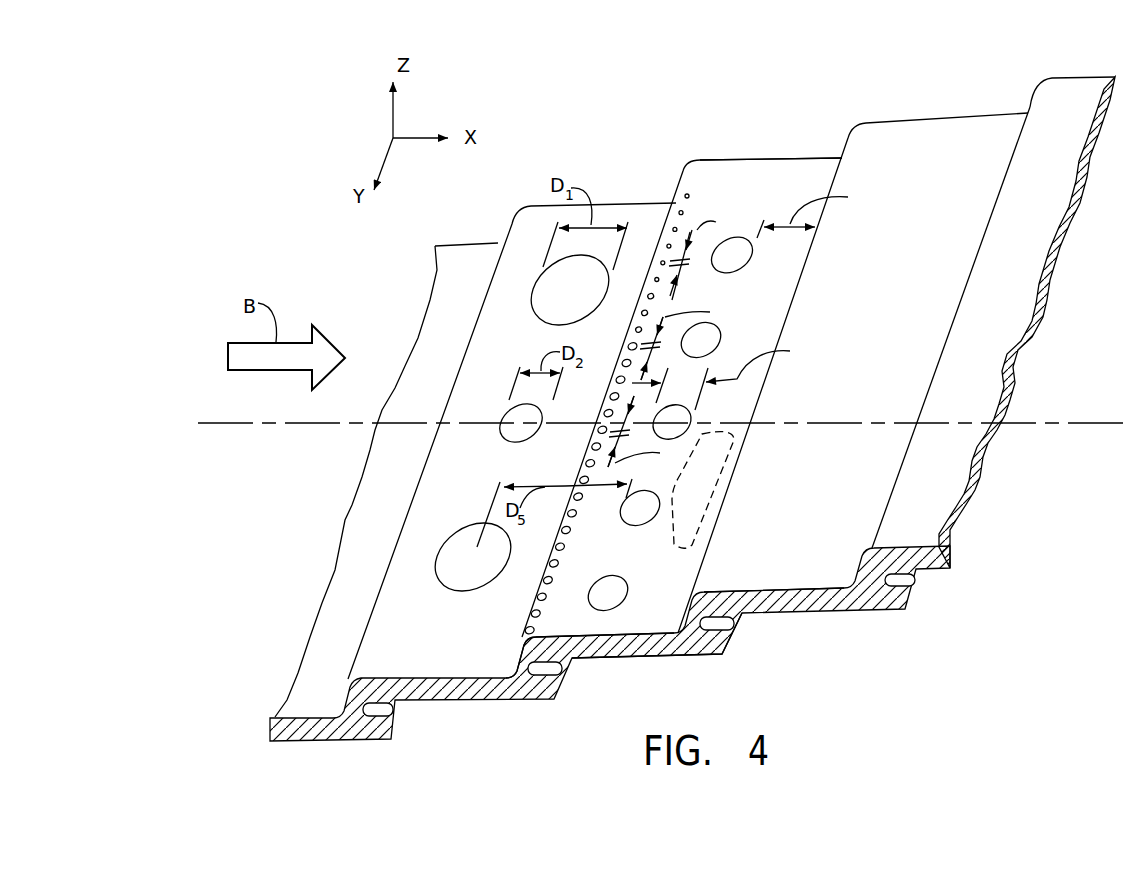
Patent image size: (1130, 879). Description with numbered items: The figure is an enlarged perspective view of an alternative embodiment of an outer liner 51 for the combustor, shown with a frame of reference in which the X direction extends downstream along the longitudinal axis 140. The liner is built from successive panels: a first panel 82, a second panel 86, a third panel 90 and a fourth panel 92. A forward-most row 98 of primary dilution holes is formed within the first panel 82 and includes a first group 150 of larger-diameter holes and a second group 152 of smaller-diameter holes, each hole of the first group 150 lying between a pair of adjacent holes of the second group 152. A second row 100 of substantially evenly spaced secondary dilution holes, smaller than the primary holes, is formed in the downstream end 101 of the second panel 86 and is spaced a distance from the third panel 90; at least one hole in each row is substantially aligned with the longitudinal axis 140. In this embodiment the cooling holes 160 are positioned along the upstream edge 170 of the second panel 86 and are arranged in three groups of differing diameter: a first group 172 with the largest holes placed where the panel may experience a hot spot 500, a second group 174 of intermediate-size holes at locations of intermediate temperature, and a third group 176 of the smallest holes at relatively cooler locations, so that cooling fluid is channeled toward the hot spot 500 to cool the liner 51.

The outer liner 51 is at (713, 150).
The cooling holes 160 is at (712, 170).
The third group 176 is at (715, 201).
The second group 174 is at (682, 299).
The first group 150 is at (553, 317).
The second group 152 is at (510, 442).
The longitudinal axis 140 is at (272, 423).
The forward-most row 98 is at (512, 441).
The first panel 82 is at (433, 667).
The upstream edge 170 is at (561, 633).
The second panel 86 is at (605, 625).
The downstream end 101 is at (694, 658).
The third panel 90 is at (788, 577).
The fourth panel 92 is at (905, 533).
The second row 100 is at (665, 424).
The first group 172 is at (601, 470).
The hot spot 500 is at (703, 490).